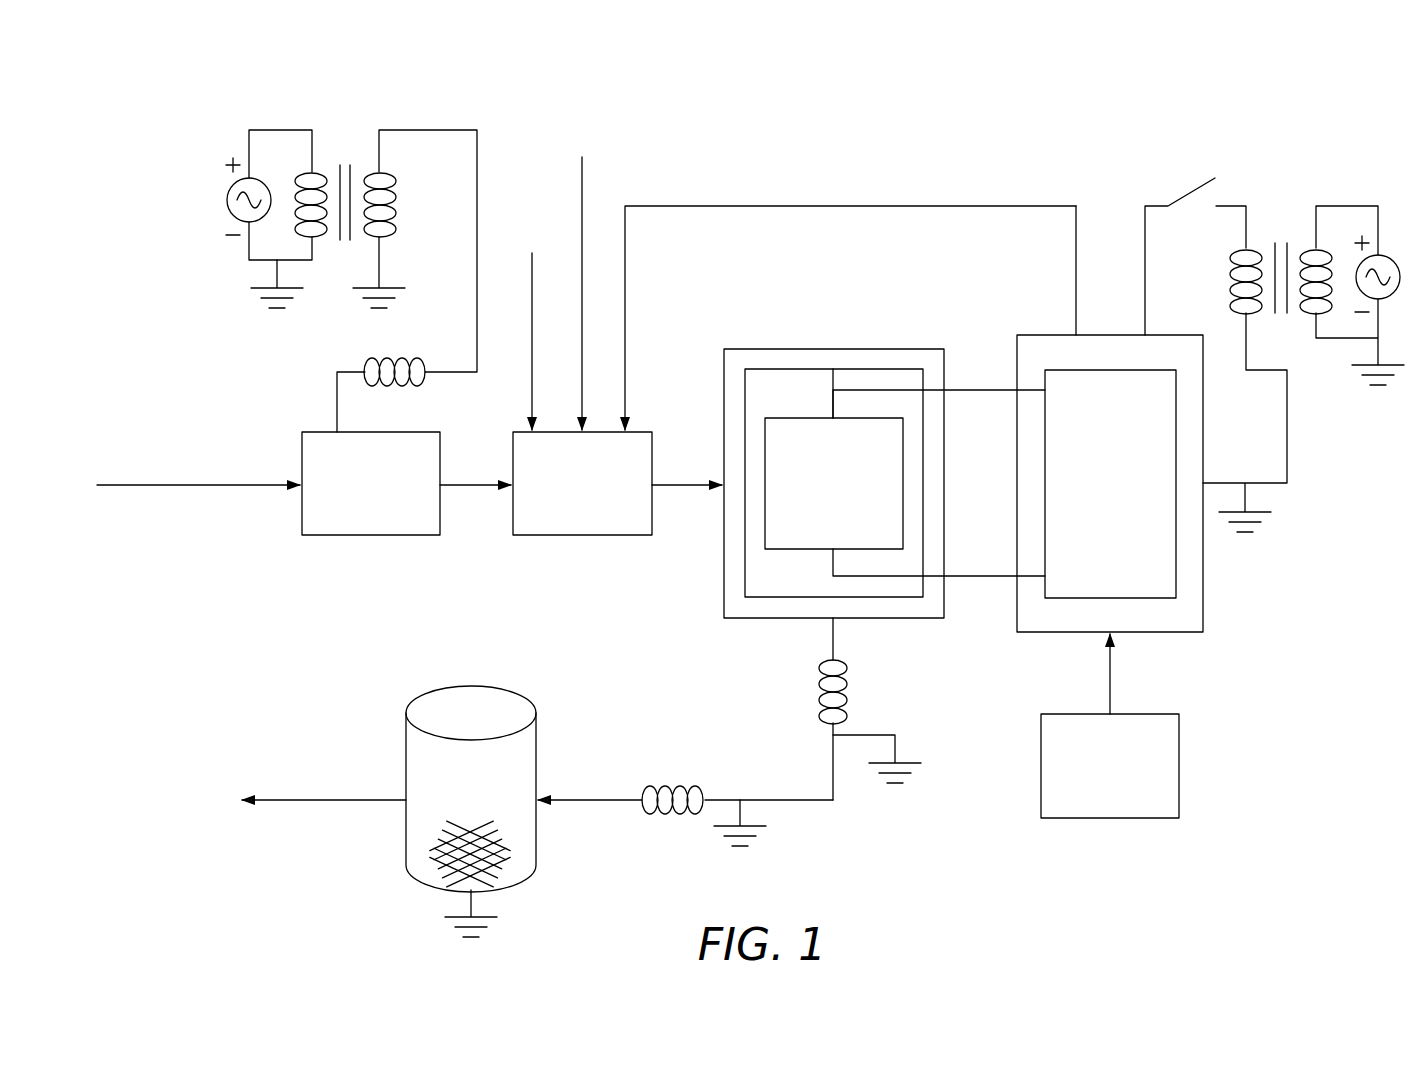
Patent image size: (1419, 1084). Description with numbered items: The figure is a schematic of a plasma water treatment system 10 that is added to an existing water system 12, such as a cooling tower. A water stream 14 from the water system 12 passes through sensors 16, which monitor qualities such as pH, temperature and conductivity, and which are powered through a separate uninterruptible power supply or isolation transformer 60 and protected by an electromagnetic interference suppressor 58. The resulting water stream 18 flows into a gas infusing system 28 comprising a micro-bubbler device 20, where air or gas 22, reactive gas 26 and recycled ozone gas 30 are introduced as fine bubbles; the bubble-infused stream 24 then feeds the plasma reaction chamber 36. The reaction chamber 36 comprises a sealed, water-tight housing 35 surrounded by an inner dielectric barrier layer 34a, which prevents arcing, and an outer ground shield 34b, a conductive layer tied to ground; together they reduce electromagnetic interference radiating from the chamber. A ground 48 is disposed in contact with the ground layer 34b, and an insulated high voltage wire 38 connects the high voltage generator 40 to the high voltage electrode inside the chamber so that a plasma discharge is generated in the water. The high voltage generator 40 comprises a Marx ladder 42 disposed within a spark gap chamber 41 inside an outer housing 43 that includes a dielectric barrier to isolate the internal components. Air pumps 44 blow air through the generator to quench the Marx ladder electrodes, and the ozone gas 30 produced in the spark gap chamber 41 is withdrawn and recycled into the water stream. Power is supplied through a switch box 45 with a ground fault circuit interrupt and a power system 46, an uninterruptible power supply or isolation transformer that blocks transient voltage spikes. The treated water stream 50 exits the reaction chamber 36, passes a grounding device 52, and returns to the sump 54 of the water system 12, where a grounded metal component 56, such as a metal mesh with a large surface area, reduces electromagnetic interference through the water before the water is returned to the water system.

The treatment system 10 is at (205, 78).
The water system 12 is at (292, 895).
The water stream 14 is at (263, 487).
The sensors 16 is at (372, 535).
The water stream 18 is at (478, 485).
The micro-bubbler device 20 is at (582, 535).
The air or gas 22 is at (532, 353).
The stream 24 is at (690, 485).
The reactive gas 26 is at (582, 196).
The gas infusing system 28 is at (512, 575).
The ozone gas 30 is at (933, 205).
The inner dielectric barrier layer 34a is at (833, 369).
The outer ground shield 34b is at (782, 349).
The housing 35 is at (903, 515).
The plasma reaction chamber 36 is at (730, 635).
The high voltage wire 38 is at (1000, 390).
The high voltage generator 40 is at (1008, 655).
The spark gap chamber 41 is at (1176, 548).
The Marx ladder 42 is at (1163, 580).
The outer housing 43 is at (1063, 335).
The air pumps 44 is at (1179, 767).
The switch box 45 is at (1232, 206).
The power system 46 is at (1347, 206).
The ground 48 is at (855, 703).
The treated water stream 50 is at (833, 778).
The grounding device 52 is at (680, 788).
The sump 54 is at (536, 840).
The grounded metal component 56 is at (485, 923).
The electromagnetic interference suppressor 58 is at (372, 362).
The uninterruptible power supply or isolation transformer 60 is at (222, 290).